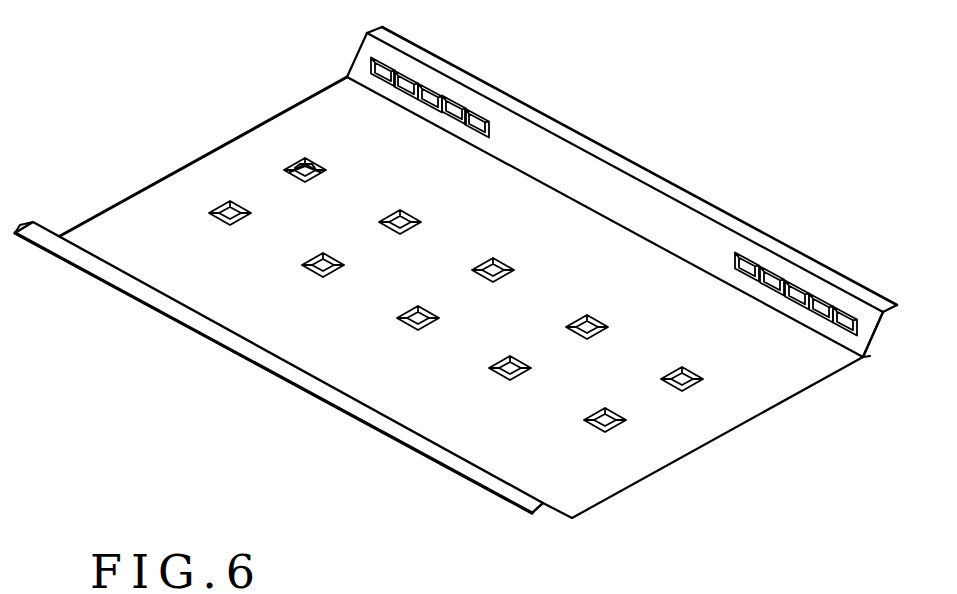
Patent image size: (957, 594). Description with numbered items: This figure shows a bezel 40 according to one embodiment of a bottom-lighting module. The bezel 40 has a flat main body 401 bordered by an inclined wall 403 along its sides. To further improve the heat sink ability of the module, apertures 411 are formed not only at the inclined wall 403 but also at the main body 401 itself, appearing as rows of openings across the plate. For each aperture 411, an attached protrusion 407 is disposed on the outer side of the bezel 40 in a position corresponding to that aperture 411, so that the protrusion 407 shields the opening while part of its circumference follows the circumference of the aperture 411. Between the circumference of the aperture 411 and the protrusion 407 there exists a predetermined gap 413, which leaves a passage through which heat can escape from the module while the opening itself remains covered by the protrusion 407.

The bezel 40 is at (100, 70).
The main body 401 is at (133, 200).
The inclined wall 403 is at (640, 163).
The protrusion 407 is at (310, 165).
The aperture 411 is at (320, 165).
The predetermined gap 413 is at (293, 165).